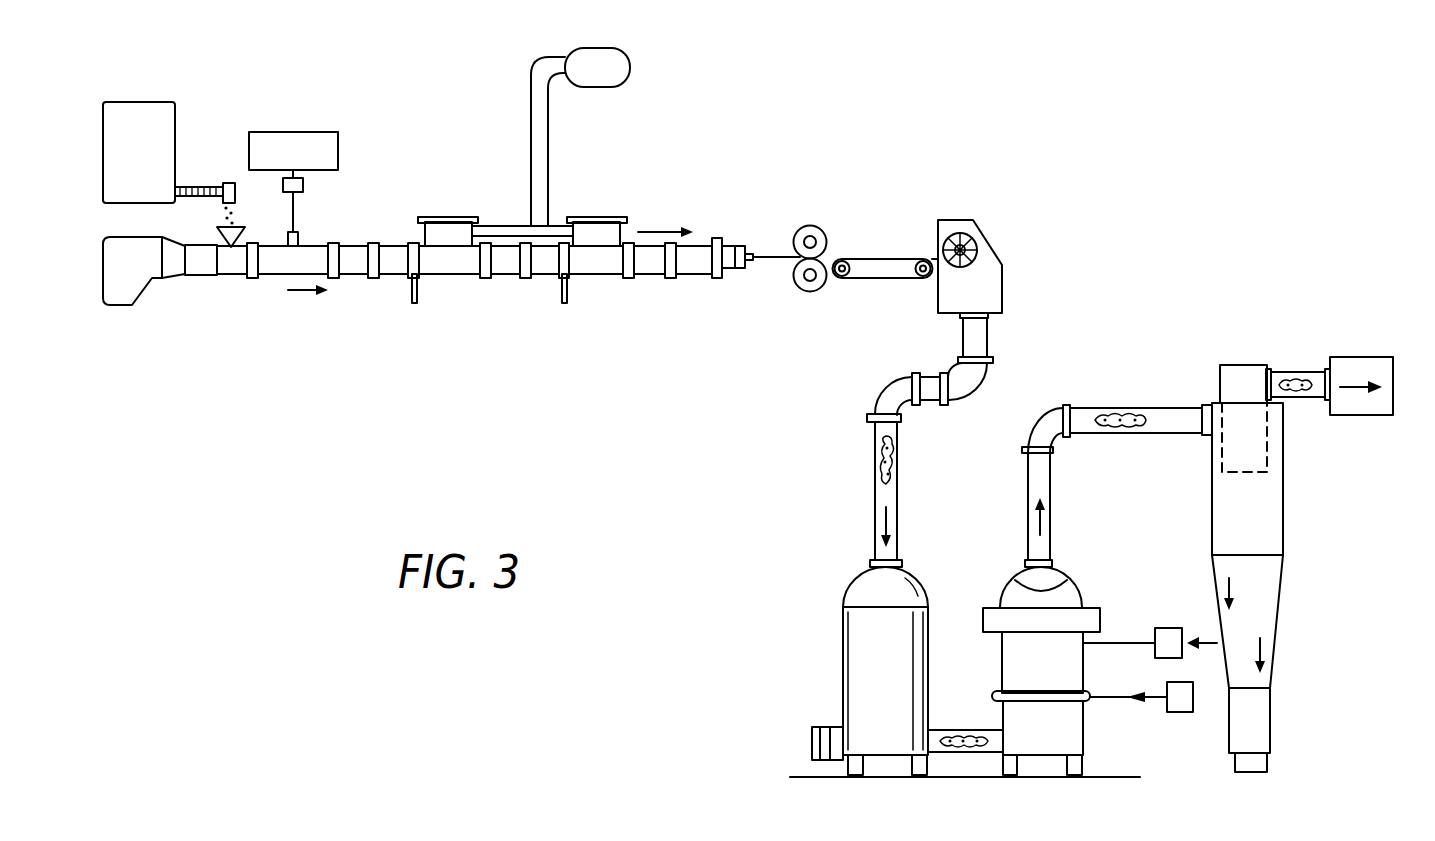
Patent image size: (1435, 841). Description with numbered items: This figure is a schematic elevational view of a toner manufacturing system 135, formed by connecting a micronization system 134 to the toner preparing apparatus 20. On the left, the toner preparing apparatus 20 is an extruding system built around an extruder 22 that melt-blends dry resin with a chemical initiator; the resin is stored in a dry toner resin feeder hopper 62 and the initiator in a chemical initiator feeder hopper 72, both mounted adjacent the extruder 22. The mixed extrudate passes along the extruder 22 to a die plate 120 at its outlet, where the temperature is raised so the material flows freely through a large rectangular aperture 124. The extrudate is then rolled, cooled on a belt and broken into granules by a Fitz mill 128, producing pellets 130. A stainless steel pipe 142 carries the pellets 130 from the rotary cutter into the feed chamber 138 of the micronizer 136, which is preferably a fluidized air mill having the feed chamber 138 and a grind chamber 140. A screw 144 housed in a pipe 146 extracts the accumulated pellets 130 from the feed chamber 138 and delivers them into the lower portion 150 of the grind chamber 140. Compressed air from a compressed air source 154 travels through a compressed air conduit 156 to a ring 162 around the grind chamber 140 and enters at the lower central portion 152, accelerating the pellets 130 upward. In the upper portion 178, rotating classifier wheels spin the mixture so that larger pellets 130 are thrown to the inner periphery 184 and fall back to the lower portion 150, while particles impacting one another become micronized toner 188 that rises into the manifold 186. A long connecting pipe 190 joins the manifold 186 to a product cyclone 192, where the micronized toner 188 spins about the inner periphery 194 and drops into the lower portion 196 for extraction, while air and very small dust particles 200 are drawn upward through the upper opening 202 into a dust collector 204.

The toner preparing apparatus 20 is at (431, 97).
The extruder 22 is at (702, 122).
The dry toner resin feeder hopper 62 is at (160, 117).
The chemical initiator feeder hopper 72 is at (328, 143).
The die plate 120 is at (744, 245).
The aperture 124 is at (763, 268).
The Fitz mill 128 is at (1000, 243).
The pellets 130 is at (895, 462).
The micronization system 134 is at (1055, 372).
The toner manufacturing system 135 is at (1130, 169).
The micronizer 136 is at (840, 570).
The feed chamber 138 is at (857, 662).
The grind chamber 140 is at (1002, 665).
The pipe 142 is at (890, 500).
The screw 144 is at (960, 733).
The pipe 146 is at (985, 753).
The lower portion 150 is at (1085, 755).
The lower central portion 152 is at (1085, 730).
The compressed air source 154 is at (1180, 712).
The compressed air conduit 156 is at (1105, 697).
The ring 162 is at (1048, 693).
The upper portion 178 is at (1085, 636).
The inner periphery 184 is at (1012, 650).
The manifold 186 is at (1000, 592).
The micronized toner 188 is at (1131, 430).
The long connecting pipe 190 is at (1120, 408).
The product cyclone 192 is at (1330, 550).
The inner periphery 194 is at (1284, 522).
The lower portion 196 is at (1272, 738).
The dust particles 200 is at (1293, 378).
The upper opening 202 is at (1213, 400).
The dust collector 204 is at (1365, 360).